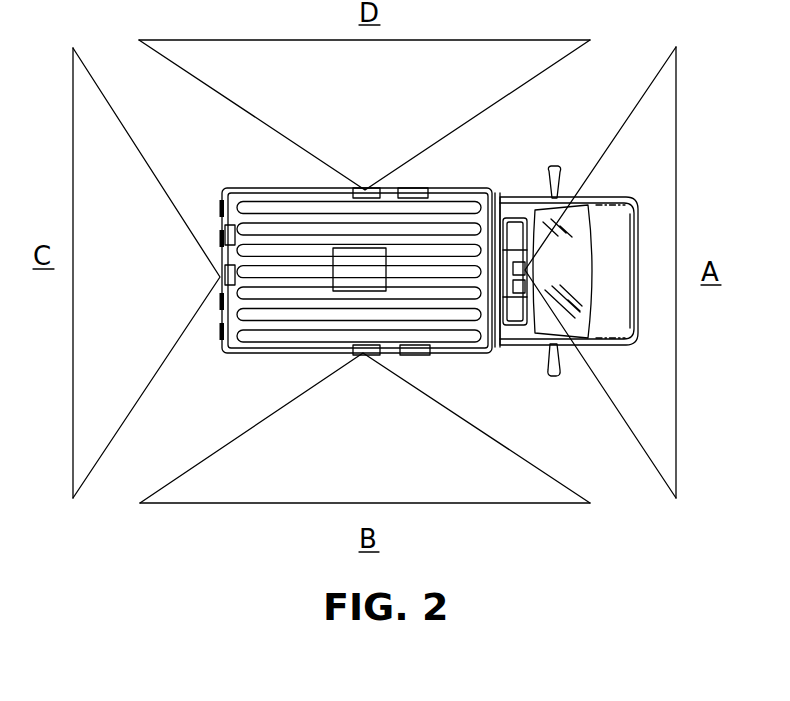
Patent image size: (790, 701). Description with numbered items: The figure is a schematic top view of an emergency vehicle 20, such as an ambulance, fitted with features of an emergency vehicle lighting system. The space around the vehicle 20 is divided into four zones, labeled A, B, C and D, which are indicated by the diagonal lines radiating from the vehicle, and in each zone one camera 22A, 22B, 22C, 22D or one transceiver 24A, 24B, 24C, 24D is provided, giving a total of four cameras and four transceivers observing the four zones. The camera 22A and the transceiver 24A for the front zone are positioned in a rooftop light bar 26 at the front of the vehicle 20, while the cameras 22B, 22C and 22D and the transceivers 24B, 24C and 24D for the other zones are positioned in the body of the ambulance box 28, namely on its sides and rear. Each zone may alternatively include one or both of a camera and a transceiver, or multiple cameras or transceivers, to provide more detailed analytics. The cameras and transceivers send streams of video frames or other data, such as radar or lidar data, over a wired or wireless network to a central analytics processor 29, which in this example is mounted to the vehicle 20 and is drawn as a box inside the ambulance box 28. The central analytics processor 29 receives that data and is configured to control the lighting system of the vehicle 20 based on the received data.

The vehicle 20 is at (592, 106).
The camera 22A is at (522, 283).
The camera 22B is at (363, 357).
The camera 22C is at (220, 277).
The camera 22D is at (375, 199).
The transceiver 24A is at (565, 268).
The transceiver 24B is at (425, 356).
The transceiver 24C is at (228, 222).
The transceiver 24D is at (425, 189).
The rooftop light bar 26 is at (508, 206).
The ambulance box 28 is at (258, 354).
The central analytics processor 29 is at (372, 281).